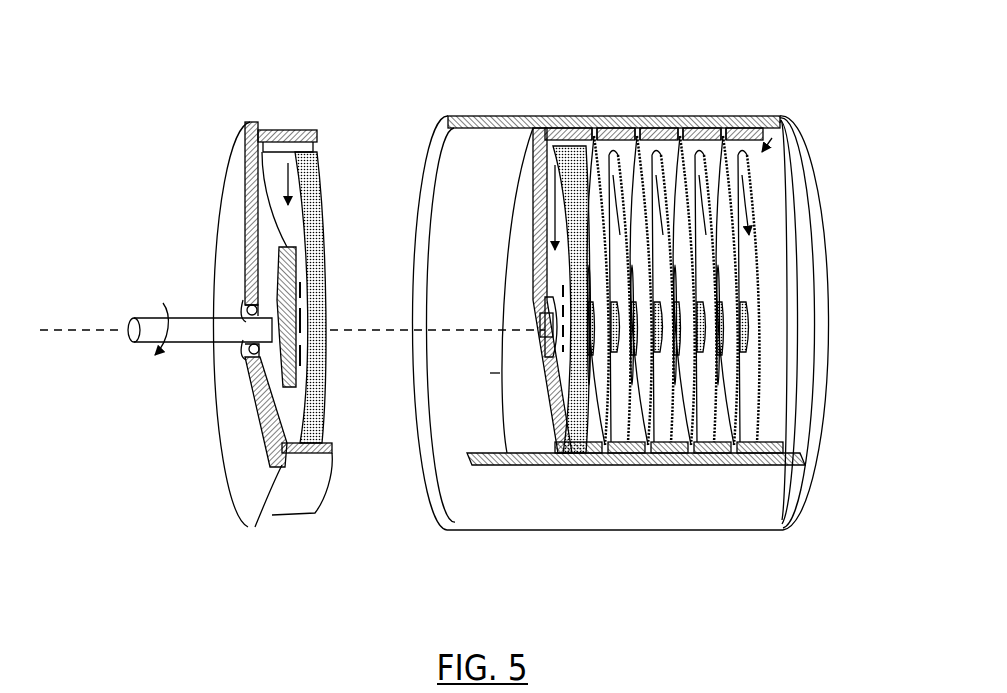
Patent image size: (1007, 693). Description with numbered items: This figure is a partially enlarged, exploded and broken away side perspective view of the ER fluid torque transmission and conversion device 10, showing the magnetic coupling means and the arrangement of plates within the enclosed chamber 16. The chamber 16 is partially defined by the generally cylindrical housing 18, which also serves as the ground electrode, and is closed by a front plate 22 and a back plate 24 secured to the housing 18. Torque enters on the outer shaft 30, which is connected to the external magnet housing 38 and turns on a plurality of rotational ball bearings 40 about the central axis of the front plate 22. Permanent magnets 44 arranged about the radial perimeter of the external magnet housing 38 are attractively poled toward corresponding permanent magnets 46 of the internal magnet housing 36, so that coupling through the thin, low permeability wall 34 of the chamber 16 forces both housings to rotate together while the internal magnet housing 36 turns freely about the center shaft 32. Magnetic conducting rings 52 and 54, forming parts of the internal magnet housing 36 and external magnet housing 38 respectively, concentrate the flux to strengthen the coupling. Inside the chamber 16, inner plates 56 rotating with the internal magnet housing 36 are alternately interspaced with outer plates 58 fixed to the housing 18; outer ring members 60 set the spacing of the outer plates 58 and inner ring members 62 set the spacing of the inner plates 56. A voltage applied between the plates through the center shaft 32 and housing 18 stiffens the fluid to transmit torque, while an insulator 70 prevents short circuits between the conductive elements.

The ER fluid torque transmission and conversion device 10 is at (417, 90).
The enclosed chamber 16 is at (772, 132).
The housing 18 is at (492, 528).
The front plate 22 is at (232, 470).
The back plate 24 is at (813, 167).
The outer shaft 30 is at (150, 322).
The center shaft 32 is at (540, 330).
The wall 34 is at (528, 153).
The internal magnet housing 36 is at (553, 468).
The external magnet housing 38 is at (317, 187).
The rotational ball bearings 40 is at (250, 310).
The permanent magnets 44 is at (305, 308).
The permanent magnets 46 is at (545, 180).
The magnetic conducting ring 52 is at (578, 467).
The magnetic conducting ring 54 is at (280, 163).
The inner plates 56 is at (630, 467).
The outer plates 58 is at (608, 467).
The outer ring members 60 is at (566, 128).
The inner ring members 62 is at (594, 134).
The insulator 70 is at (545, 303).